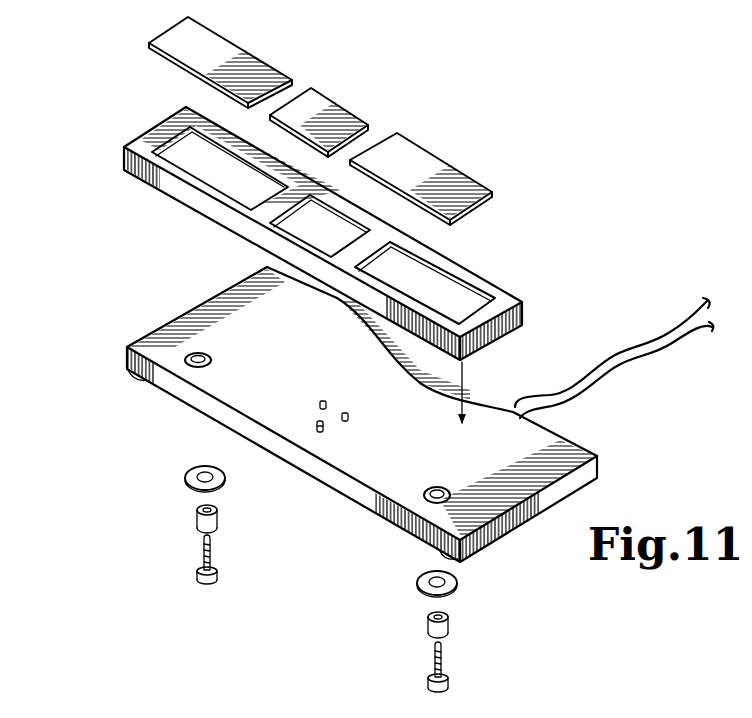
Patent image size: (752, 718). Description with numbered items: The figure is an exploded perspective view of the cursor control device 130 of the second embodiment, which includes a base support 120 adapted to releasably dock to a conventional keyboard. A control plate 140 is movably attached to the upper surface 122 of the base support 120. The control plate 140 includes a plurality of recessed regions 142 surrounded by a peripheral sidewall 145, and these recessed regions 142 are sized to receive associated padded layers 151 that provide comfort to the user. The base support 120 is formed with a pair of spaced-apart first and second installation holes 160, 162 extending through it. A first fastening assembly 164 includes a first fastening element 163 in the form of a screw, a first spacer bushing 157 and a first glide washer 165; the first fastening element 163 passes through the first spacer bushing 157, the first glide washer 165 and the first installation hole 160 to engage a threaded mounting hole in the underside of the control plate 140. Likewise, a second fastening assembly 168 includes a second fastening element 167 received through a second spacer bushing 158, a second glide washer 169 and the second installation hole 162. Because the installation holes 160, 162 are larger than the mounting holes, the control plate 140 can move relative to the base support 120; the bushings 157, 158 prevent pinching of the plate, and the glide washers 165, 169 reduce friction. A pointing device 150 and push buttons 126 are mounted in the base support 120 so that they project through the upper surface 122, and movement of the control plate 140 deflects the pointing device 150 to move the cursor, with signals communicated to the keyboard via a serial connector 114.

The serial connector 114 is at (647, 355).
The base support 120 is at (543, 465).
The upper surface 122 is at (162, 348).
The push buttons 126 is at (346, 413).
The cursor control device 130 is at (607, 302).
The control plate 140 is at (126, 232).
The recessed regions 142 is at (412, 287).
The peripheral sidewall 145 is at (522, 383).
The pointing device 150 is at (324, 428).
The padded layers 151 is at (263, 62).
The first spacer bushing 157 is at (217, 518).
The second spacer bushing 158 is at (447, 623).
The first installation hole 160 is at (130, 362).
The second installation hole 162 is at (440, 487).
The first fastening element 163 is at (217, 575).
The first fastening assembly 164 is at (164, 525).
The first glide washer 165 is at (185, 480).
The second fastening element 167 is at (448, 678).
The second fastening assembly 168 is at (414, 631).
The second glide washer 169 is at (457, 582).